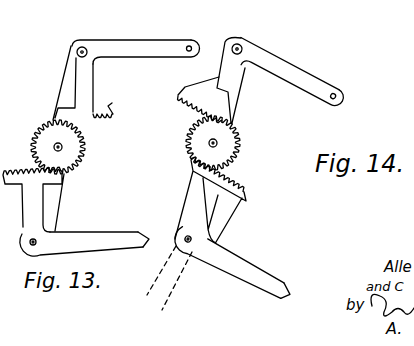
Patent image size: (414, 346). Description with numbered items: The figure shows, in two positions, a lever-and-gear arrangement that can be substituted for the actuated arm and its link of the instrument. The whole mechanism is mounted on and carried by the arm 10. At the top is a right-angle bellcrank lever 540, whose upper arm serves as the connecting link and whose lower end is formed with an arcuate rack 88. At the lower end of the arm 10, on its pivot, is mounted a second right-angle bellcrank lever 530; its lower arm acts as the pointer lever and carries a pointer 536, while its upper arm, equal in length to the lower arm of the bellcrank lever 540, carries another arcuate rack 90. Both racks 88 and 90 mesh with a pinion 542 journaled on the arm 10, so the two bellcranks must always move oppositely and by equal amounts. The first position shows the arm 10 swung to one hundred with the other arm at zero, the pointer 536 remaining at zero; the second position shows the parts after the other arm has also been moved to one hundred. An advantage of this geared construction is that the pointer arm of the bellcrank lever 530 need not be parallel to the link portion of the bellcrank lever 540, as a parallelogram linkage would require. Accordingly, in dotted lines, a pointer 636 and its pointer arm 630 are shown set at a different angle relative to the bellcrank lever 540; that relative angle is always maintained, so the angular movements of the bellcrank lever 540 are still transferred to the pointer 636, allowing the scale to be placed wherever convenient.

In FIG. 13, the arm 10 is at (63, 86).
In FIG. 14, the arm 10 is at (247, 82).
In FIG. 13, the arcuate rack 88 is at (104, 108).
In FIG. 14, the arcuate rack 88 is at (190, 101).
In FIG. 13, the arcuate rack 90 is at (19, 171).
In FIG. 14, the arcuate rack 90 is at (244, 183).
In FIG. 13, the right-angle bellcrank lever 530 is at (70, 239).
In FIG. 14, the right-angle bellcrank lever 530 is at (222, 258).
In FIG. 13, the pointer 536 is at (146, 236).
In FIG. 14, the pointer 536 is at (291, 287).
In FIG. 13, the right-angle bellcrank lever 540 is at (125, 46).
In FIG. 14, the right-angle bellcrank lever 540 is at (274, 66).
In FIG. 13, the pinion 542 is at (73, 152).
In FIG. 14, the pinion 542 is at (232, 131).
In FIG. 14, the pointer arm 630 is at (178, 268).
In FIG. 14, the pointer 636 is at (165, 303).